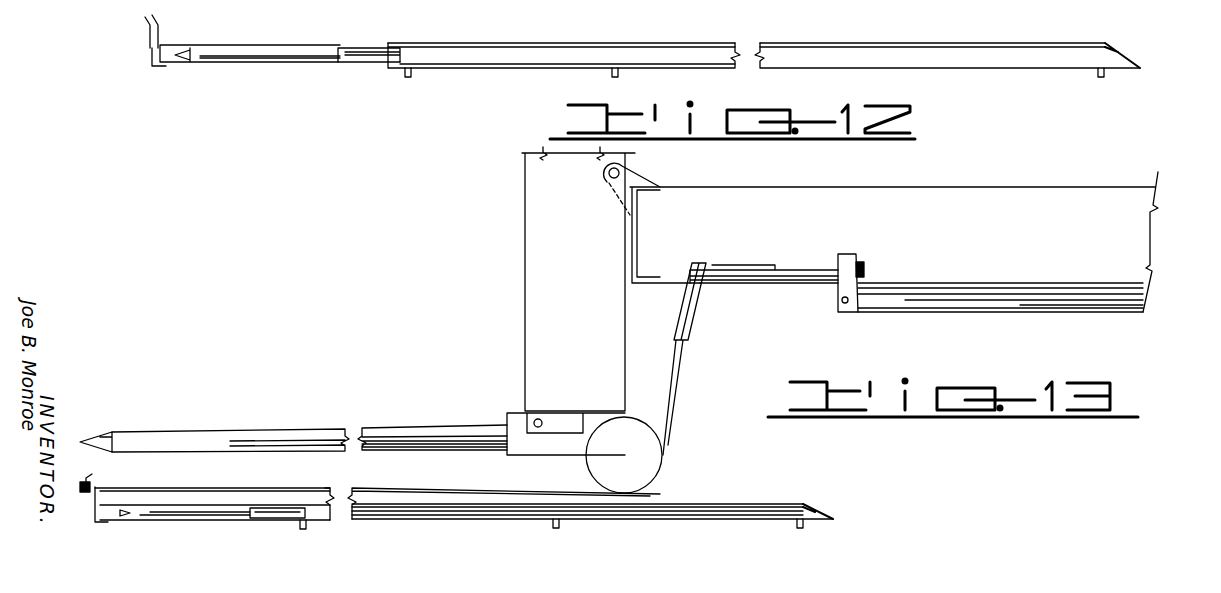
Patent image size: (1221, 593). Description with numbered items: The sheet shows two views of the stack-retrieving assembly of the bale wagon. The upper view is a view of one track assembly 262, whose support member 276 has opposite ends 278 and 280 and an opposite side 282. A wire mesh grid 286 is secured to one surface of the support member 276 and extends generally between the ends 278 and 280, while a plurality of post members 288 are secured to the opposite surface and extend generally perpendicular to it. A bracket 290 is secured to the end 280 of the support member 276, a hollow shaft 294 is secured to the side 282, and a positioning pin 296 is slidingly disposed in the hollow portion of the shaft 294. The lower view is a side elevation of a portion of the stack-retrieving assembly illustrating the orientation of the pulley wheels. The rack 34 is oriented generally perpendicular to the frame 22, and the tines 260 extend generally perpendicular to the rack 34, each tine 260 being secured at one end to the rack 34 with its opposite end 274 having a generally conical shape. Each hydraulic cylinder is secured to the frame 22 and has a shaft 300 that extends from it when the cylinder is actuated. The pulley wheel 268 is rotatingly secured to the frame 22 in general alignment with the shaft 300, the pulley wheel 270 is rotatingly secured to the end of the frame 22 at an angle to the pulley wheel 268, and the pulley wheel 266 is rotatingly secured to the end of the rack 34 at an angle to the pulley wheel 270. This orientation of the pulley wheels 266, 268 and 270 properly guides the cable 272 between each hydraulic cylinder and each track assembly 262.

In FIG. 13, the frame 22 is at (1010, 200).
In FIG. 13, the rack 34 is at (535, 268).
In FIG. 13, the tines 260 is at (297, 432).
In FIG. 13, the track assembly 262 is at (370, 520).
In FIG. 13, the pulley wheel 266 is at (660, 458).
In FIG. 13, the pulley wheel 268 is at (752, 265).
In FIG. 13, the pulley wheel 270 is at (700, 333).
In FIG. 13, the cable 272 is at (452, 490).
In FIG. 13, the opposite end 274 is at (105, 440).
In FIG. 12, the support member 276 is at (448, 58).
In FIG. 13, the support member 276 is at (508, 520).
In FIG. 12, the end 278 is at (1128, 58).
In FIG. 13, the end 278 is at (825, 512).
In FIG. 12, the end 280 is at (152, 58).
In FIG. 13, the end 280 is at (95, 522).
In FIG. 12, the side 282 is at (500, 60).
In FIG. 13, the side 282 is at (448, 520).
In FIG. 12, the wire mesh grid 286 is at (551, 44).
In FIG. 12, the post members 288 is at (408, 77).
In FIG. 13, the post members 288 is at (300, 526).
In FIG. 12, the bracket 290 is at (158, 22).
In FIG. 13, the bracket 290 is at (90, 487).
In FIG. 12, the hollow shaft 294 is at (236, 62).
In FIG. 13, the hollow shaft 294 is at (228, 510).
In FIG. 12, the positioning pin 296 is at (372, 58).
In FIG. 13, the positioning pin 296 is at (120, 510).
In FIG. 13, the shaft 300 is at (990, 300).